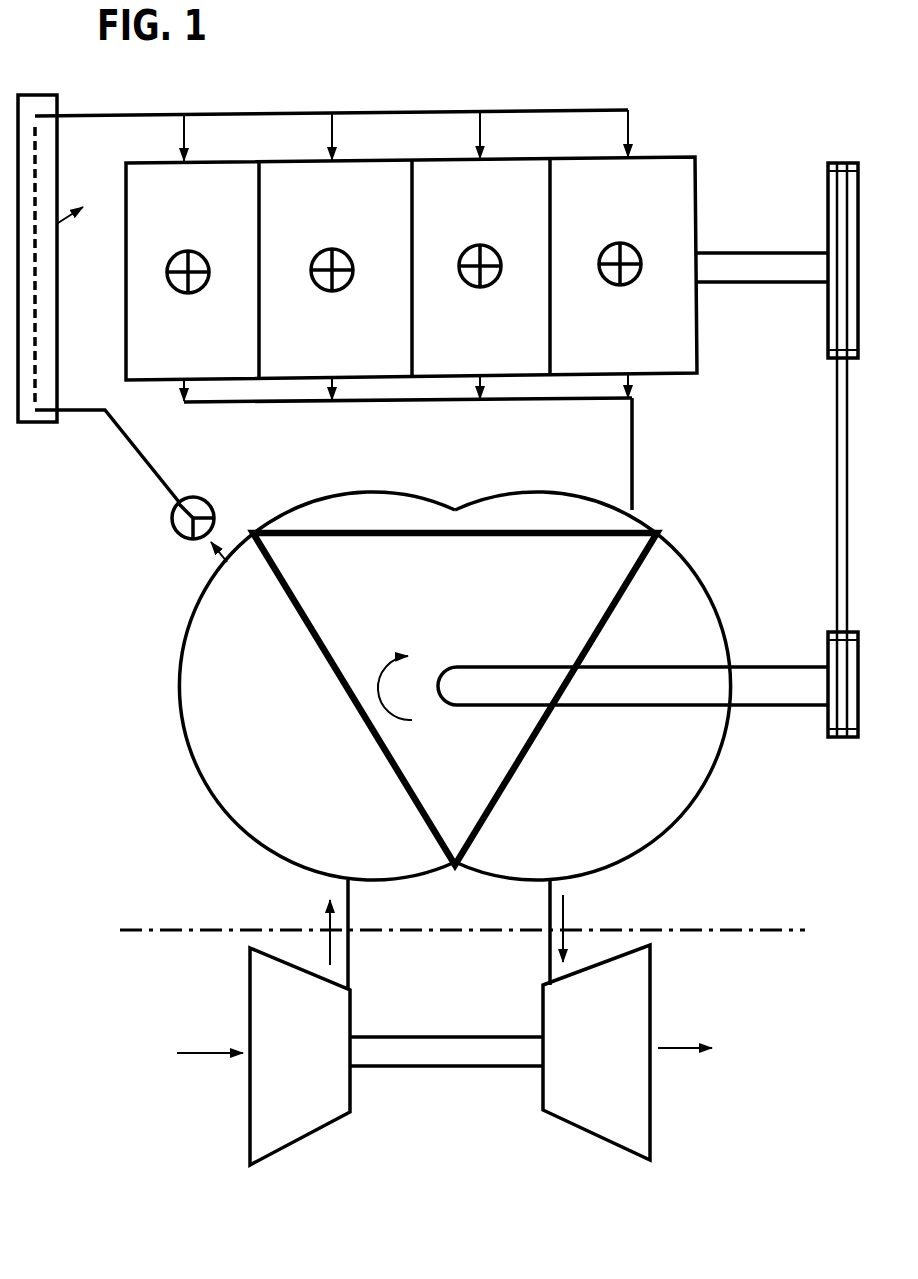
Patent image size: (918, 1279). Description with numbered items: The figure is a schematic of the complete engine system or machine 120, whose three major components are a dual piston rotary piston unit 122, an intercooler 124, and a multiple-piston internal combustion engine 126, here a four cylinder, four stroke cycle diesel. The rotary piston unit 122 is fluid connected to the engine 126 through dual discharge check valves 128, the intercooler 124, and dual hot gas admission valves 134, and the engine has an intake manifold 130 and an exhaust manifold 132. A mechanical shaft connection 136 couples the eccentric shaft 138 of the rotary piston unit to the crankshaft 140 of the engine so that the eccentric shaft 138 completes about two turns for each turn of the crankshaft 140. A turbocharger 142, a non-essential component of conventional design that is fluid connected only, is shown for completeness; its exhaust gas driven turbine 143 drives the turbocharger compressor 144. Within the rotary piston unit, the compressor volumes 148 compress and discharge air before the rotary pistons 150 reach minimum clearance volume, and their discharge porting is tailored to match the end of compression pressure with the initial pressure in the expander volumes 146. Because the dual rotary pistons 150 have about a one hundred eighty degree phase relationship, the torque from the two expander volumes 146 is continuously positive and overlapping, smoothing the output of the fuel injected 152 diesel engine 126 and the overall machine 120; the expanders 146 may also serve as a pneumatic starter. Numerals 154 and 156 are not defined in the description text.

The machine with multipiston engine 120 is at (703, 113).
The rotary piston unit 122 is at (702, 788).
The intercooler 124 is at (58, 343).
The multiple-piston internal combustion engine 126 is at (700, 175).
The discharge check valve 128 is at (172, 511).
The intake manifold 130 is at (537, 110).
The exhaust manifold 132 is at (412, 401).
The admission valve 134 is at (418, 512).
The mechanical shaft connection 136 is at (838, 413).
The eccentric shaft 138 is at (793, 664).
The crankshaft 140 is at (733, 253).
The turbocharger 142 is at (475, 1037).
The turbine of turbocharger 143 is at (640, 973).
The compressor of turbocharger 144 is at (270, 978).
The expander volume 146 is at (683, 592).
The compressor volume 148 is at (223, 598).
The piston 150 is at (370, 637).
The fuel injector 152 is at (634, 283).
The coolant inlet 154 is at (635, 507).
The coolant outlet 156 is at (226, 561).